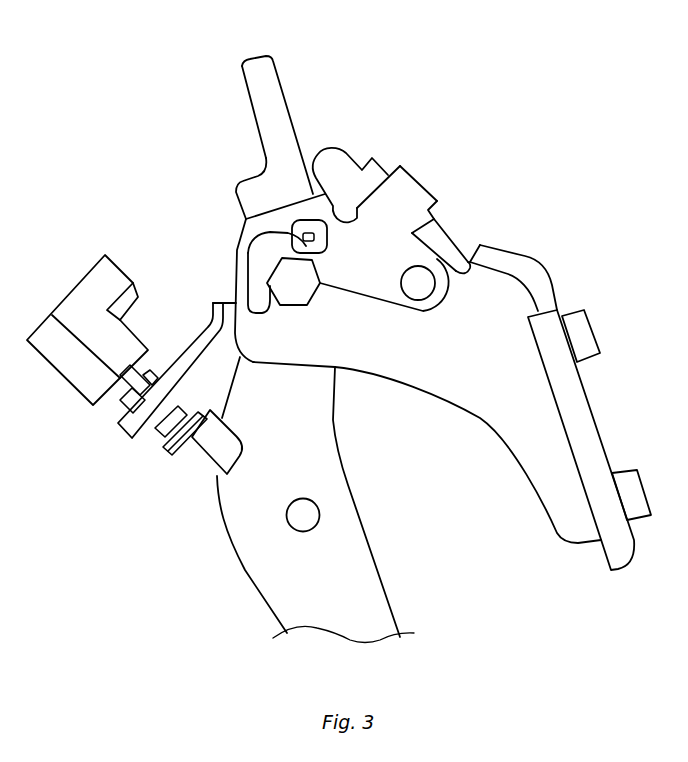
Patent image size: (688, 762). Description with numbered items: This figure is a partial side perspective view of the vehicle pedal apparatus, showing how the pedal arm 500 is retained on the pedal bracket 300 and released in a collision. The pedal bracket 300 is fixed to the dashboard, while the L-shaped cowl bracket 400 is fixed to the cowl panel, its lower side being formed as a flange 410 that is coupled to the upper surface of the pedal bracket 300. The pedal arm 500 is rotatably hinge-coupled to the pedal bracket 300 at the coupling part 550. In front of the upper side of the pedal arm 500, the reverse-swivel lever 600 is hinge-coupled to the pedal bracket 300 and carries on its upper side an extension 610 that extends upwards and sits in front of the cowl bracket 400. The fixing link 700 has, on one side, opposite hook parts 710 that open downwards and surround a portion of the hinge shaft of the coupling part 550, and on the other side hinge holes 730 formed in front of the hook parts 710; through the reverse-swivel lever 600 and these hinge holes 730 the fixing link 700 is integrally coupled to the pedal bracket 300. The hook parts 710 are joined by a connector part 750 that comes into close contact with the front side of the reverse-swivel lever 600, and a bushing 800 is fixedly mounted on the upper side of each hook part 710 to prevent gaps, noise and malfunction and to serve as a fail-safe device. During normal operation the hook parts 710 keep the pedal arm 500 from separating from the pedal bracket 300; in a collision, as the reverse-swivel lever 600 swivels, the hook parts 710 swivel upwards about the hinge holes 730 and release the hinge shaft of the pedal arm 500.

The pedal bracket 300 is at (498, 327).
The cowl bracket 400 is at (282, 71).
The flange 410 is at (250, 190).
The pedal arm 500 is at (367, 593).
The coupling part 550 is at (283, 270).
The reverse-swivel lever 600 is at (395, 155).
The extension 610 is at (335, 162).
The fixing link 700 is at (383, 246).
The hook parts 710 is at (253, 298).
The hinge holes 730 is at (420, 281).
The connector part 750 is at (417, 182).
The bushing 800 is at (308, 224).